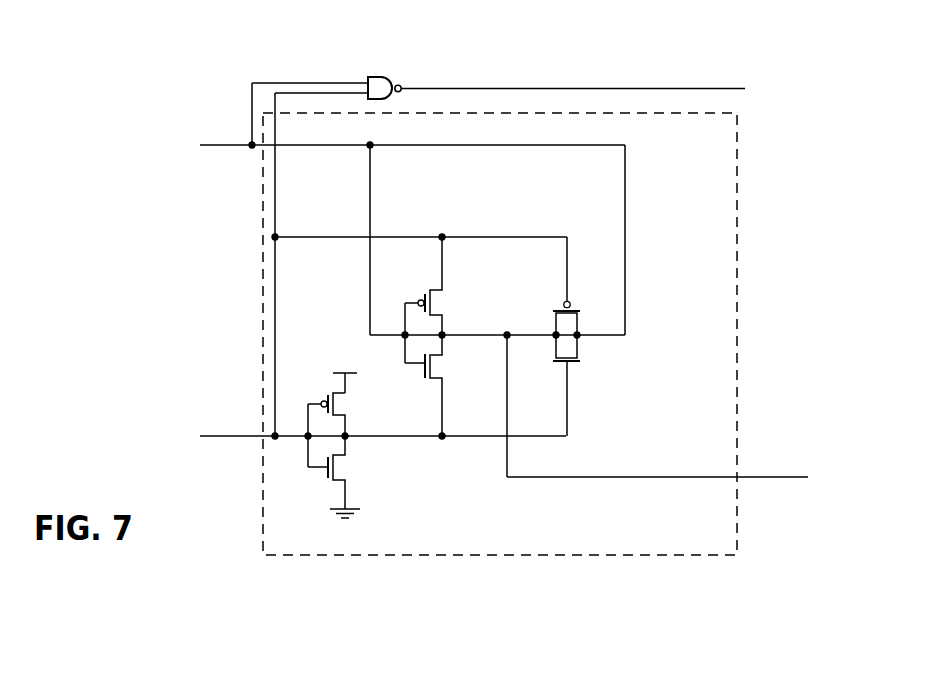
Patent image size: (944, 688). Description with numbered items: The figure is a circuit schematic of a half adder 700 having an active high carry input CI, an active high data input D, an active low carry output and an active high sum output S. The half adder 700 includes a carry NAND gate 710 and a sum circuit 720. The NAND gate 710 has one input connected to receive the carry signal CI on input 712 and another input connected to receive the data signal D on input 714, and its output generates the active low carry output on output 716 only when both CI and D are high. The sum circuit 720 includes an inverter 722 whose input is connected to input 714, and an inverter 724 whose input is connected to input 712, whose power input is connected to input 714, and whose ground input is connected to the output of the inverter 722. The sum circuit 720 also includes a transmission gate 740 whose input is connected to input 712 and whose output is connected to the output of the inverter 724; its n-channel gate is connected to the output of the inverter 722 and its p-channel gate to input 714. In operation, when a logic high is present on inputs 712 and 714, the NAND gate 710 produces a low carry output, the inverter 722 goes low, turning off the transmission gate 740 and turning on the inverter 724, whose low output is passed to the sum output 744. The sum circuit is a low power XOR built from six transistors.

The half adder 700 is at (642, 55).
The carry NAND gate 710 is at (381, 77).
The input 712 is at (221, 148).
The input 714 is at (228, 439).
The output 716 is at (708, 89).
The sum circuit 720 is at (263, 232).
The inverter 722 is at (330, 353).
The inverter 724 is at (457, 272).
The transmission gate 740 is at (613, 355).
The sum output 744 is at (757, 475).